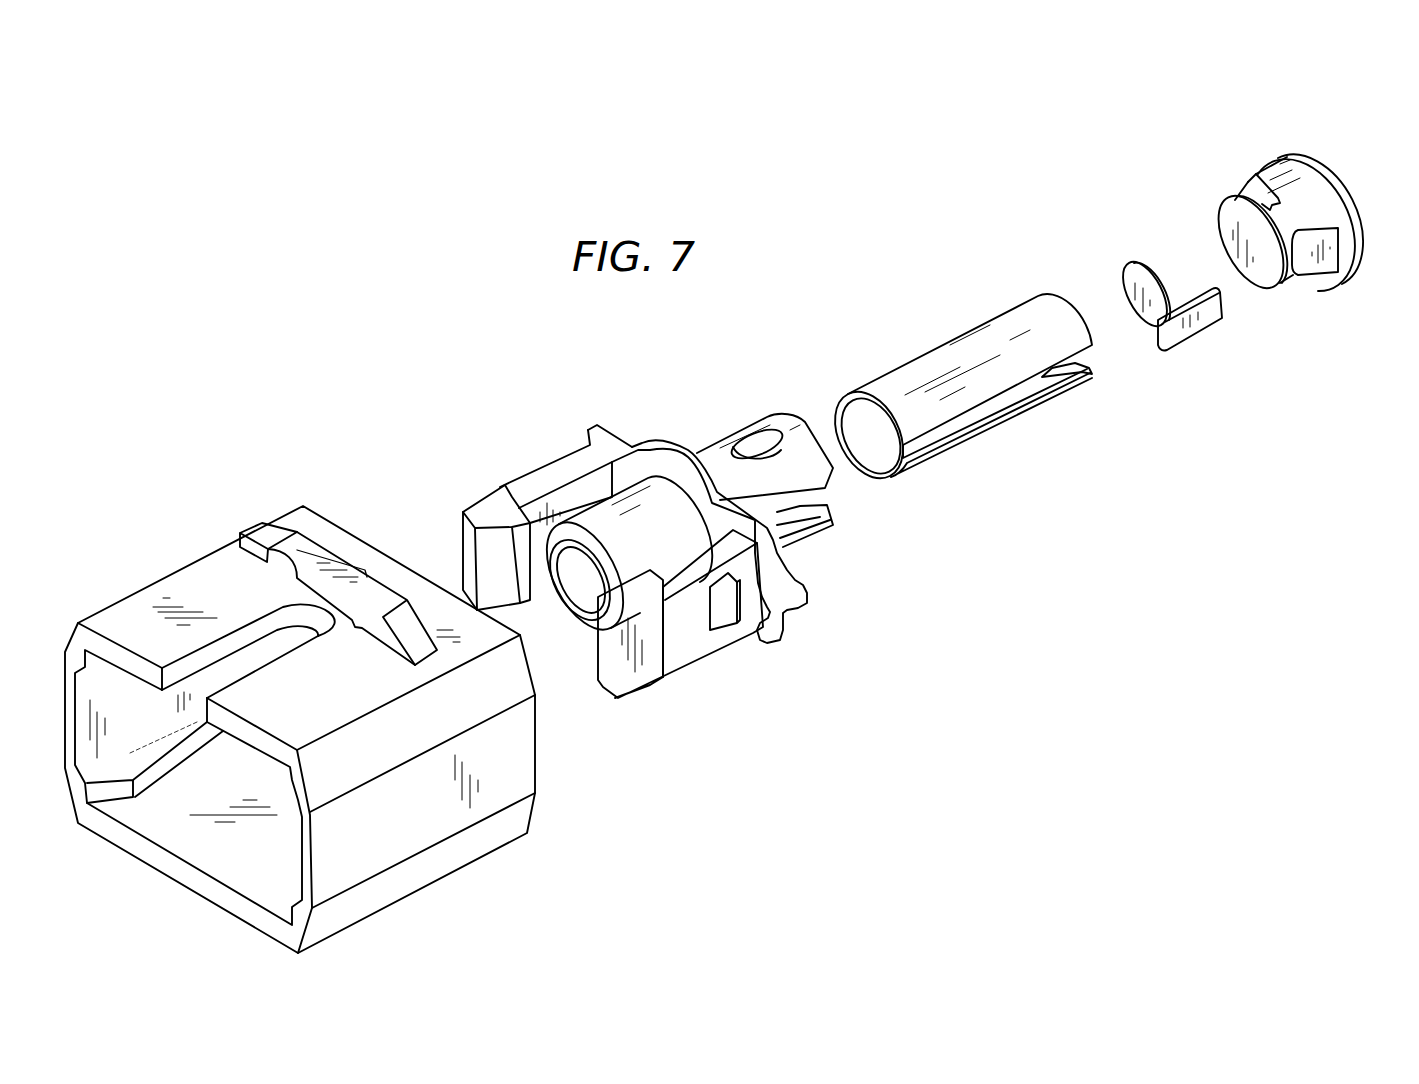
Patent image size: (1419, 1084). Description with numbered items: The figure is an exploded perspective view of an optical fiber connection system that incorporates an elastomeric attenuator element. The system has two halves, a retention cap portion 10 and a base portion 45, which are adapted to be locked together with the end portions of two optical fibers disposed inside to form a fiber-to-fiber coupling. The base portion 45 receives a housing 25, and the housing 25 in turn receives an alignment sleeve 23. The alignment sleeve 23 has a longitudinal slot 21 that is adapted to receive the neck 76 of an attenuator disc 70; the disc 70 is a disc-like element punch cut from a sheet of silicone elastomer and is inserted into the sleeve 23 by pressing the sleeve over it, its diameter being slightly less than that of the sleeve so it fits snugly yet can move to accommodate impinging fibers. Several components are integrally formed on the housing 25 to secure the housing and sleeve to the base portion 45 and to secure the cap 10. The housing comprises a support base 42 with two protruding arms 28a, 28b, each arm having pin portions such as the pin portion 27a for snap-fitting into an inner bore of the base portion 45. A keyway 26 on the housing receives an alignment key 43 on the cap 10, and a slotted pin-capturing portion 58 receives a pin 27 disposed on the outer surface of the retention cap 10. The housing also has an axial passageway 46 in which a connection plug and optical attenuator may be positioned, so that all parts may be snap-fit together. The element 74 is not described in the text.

The retention cap portion 10 is at (1298, 203).
The longitudinal slot 21 is at (1083, 370).
The alignment sleeve 23 is at (982, 392).
The housing 25 is at (752, 425).
The keyway 26 is at (830, 520).
The pin 27 is at (1255, 163).
The pin portion 27a is at (723, 612).
The protruding arm 28a is at (687, 650).
The protruding arm 28b is at (540, 480).
The support base 42 is at (610, 425).
The alignment key 43 is at (1335, 262).
The base portion 45 is at (423, 868).
The axial passageway 46 is at (587, 590).
The slotted pin-capturing portion 58 is at (762, 440).
The attenuator disc 70 is at (1207, 293).
The disc 74 is at (1128, 297).
The neck 76 is at (1185, 292).